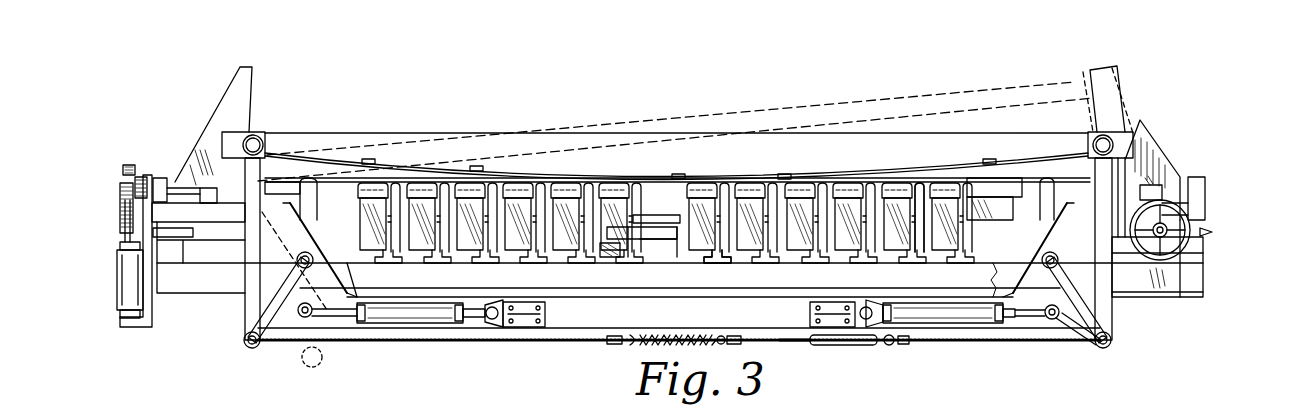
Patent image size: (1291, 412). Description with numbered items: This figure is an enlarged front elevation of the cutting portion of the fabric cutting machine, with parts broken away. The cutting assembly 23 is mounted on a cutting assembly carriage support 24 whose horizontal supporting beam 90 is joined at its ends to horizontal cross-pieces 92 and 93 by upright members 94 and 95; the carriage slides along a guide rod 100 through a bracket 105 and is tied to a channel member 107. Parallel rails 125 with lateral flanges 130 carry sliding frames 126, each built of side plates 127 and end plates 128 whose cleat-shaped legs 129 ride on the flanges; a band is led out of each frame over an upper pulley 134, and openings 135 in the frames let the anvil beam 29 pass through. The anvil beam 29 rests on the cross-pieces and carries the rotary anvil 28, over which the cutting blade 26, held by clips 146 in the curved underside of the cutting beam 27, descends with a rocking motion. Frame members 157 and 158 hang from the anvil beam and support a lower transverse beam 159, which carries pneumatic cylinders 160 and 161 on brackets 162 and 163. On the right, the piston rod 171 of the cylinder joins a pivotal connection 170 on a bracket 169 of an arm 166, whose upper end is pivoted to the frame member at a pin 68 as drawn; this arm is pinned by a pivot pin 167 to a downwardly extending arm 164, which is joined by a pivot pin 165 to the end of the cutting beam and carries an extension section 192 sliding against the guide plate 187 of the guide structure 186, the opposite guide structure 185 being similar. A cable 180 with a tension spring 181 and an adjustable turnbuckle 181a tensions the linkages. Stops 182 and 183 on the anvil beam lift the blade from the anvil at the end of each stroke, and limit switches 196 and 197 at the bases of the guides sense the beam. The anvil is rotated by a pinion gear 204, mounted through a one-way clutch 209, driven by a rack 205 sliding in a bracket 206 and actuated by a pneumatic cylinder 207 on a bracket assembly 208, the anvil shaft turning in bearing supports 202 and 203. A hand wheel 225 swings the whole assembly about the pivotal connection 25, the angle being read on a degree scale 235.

The cutting assembly 23 is at (386, 128).
The cutting assembly carriage support 24 is at (1212, 277).
The pivotal connection 25 is at (675, 217).
The cutting blade 26 is at (932, 166).
The cutting beam 27 is at (822, 150).
The rotary anvil 28 is at (1003, 178).
The anvil beam 29 is at (995, 209).
The pivot pin 68 is at (1052, 254).
The horizontal supporting beam 90 is at (622, 283).
The horizontal cross-piece 92 is at (192, 233).
The horizontal cross-piece 93 is at (1200, 228).
The upright member 94 is at (167, 256).
The upright member 95 is at (1205, 250).
The guide rod 100 is at (615, 257).
The bracket 105 is at (627, 242).
The upper channel member 107 is at (668, 233).
The rail 125 is at (815, 260).
The sliding frame 126 is at (932, 237).
The side plate 127 is at (922, 230).
The transverse end plate 128 is at (945, 243).
The cleat-shaped leg 129 is at (775, 262).
The flange 130 is at (722, 258).
The upper pulley 134 is at (518, 185).
The opening 135 is at (728, 193).
The clip 146 is at (983, 165).
The frame member 157 is at (293, 248).
The frame member 158 is at (1108, 300).
The lower transverse beam 159 is at (733, 318).
The pneumatic double-acting actuating cylinder 160 is at (425, 313).
The pneumatic double-acting actuating cylinder 161 is at (960, 318).
The bracket 162 is at (502, 316).
The bracket 163 is at (850, 345).
The arm 164 is at (1113, 322).
The pivot pin 165 is at (1103, 145).
The arm 166 is at (1082, 320).
The pivot pin 167 is at (1112, 343).
The bracket 169 is at (1063, 330).
The pivotal connection 170 is at (1055, 320).
The piston rod 171 is at (1025, 318).
The cable 180 is at (455, 345).
The tension spring 181 is at (680, 341).
The turnbuckle 181a is at (900, 346).
The pin 182 is at (308, 180).
The pin 183 is at (1043, 180).
The guide structure 185 is at (226, 70).
The guide structure 186 is at (1148, 94).
The side plate 187 is at (1147, 143).
The extension section 192 is at (1123, 150).
The limit switch 196 is at (208, 188).
The limit switch 197 is at (1150, 190).
The bearing support 202 is at (162, 178).
The bearing support 203 is at (1197, 183).
The pinion gear 204 is at (128, 168).
The toothed rack 205 is at (125, 226).
The bracket 206 is at (120, 210).
The double-acting pneumatic cylinder 207 is at (120, 297).
The bracket assembly 208 is at (155, 328).
The one-way slipping clutch arrangement 209 is at (143, 180).
The hand wheel 225 is at (1190, 253).
The degree scale 235 is at (1212, 232).